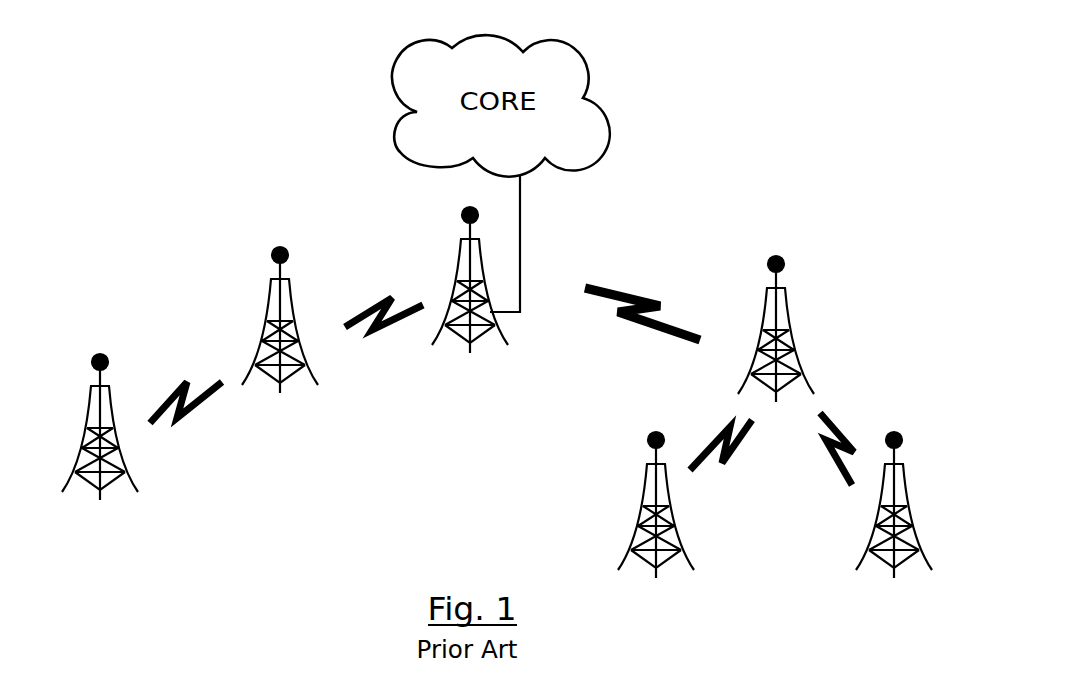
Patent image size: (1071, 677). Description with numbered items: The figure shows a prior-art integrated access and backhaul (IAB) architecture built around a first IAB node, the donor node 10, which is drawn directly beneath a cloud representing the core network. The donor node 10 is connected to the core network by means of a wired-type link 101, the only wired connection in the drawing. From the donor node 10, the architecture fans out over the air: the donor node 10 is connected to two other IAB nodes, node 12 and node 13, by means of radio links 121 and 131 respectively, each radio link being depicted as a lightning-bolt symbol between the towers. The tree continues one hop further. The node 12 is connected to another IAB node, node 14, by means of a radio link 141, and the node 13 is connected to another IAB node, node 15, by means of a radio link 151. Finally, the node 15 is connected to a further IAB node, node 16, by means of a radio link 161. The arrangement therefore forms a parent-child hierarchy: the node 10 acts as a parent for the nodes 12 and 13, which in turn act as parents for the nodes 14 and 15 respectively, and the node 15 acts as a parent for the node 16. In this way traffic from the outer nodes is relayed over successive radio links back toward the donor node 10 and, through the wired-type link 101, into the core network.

The donor node 10 is at (461, 262).
The wired-type link 101 is at (520, 238).
The IAB node 12 is at (270, 298).
The radio link 121 is at (383, 300).
The IAB node 13 is at (792, 336).
The radio link 131 is at (633, 301).
The IAB node 14 is at (85, 412).
The radio link 141 is at (178, 395).
The IAB node 15 is at (645, 497).
The radio link 151 is at (727, 460).
The IAB node 16 is at (908, 508).
The radio link 161 is at (840, 428).